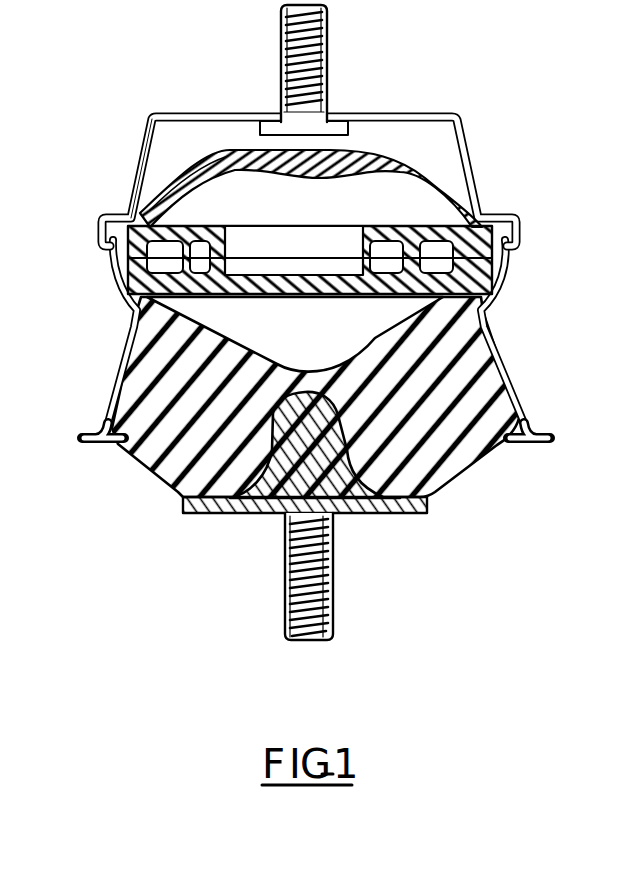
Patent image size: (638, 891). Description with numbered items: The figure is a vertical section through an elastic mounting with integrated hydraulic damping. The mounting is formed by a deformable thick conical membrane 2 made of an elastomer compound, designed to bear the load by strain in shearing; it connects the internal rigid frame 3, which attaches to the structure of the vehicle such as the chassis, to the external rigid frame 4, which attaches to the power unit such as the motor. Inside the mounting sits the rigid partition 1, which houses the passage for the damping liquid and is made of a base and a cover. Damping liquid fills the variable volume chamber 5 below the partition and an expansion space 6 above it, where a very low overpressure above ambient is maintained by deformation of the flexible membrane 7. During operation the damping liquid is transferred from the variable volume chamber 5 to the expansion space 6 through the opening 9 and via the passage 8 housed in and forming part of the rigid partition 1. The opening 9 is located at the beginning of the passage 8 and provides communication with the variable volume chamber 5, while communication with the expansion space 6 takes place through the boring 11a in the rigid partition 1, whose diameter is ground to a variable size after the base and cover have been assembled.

The rigid partition 1 is at (150, 218).
The deformable thick conical membrane 2 is at (187, 400).
The internal rigid frame 3 is at (287, 470).
The external rigid frame 4 is at (112, 415).
The variable volume chamber 5 is at (363, 320).
The expansion space 6 is at (390, 200).
The flexible membrane 7 is at (358, 150).
The passage 8 is at (172, 264).
The opening 9 is at (320, 185).
The boring 11a is at (278, 243).